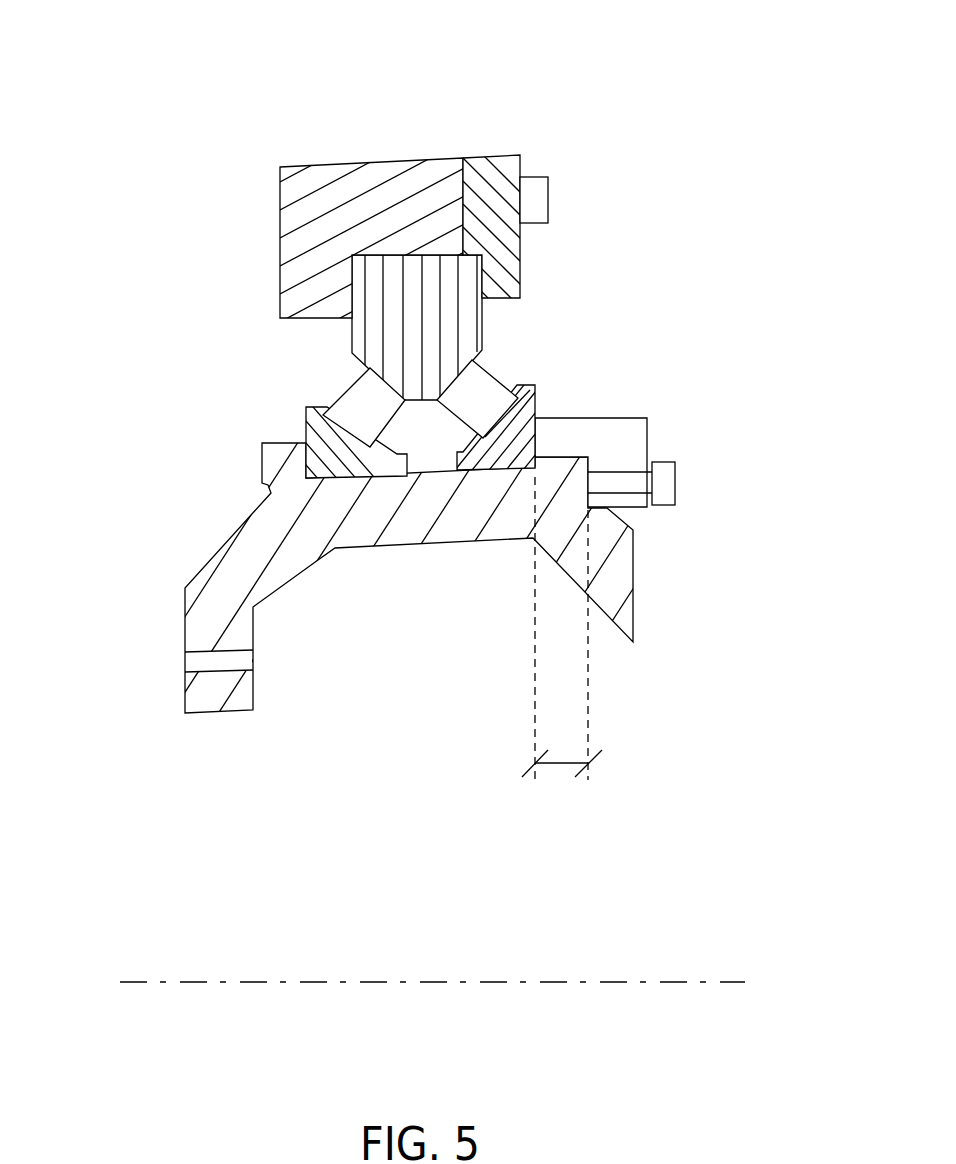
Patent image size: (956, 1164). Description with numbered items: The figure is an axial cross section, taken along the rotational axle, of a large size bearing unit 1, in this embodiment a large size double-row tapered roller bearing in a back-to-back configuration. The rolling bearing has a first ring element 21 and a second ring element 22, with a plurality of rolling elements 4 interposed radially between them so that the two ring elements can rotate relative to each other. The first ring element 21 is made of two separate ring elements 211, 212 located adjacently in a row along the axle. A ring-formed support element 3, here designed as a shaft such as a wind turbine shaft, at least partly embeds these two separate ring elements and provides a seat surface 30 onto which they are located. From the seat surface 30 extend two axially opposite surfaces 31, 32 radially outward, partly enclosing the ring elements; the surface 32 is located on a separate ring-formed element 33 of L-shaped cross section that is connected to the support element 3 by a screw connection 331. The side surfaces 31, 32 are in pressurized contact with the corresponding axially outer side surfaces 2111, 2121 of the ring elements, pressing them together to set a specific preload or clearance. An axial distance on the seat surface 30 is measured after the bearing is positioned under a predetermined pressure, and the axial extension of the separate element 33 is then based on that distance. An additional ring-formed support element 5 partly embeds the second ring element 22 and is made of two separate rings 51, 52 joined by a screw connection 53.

The large size bearing unit 1 is at (213, 97).
The ring-formed support element 3 is at (215, 713).
The seat surface 30 is at (433, 474).
The axially opposite surface 31 is at (410, 560).
The axially outer side surface 2111 is at (303, 457).
The first ring element 21 is at (312, 445).
The separate ring element 211 is at (360, 516).
The separate ring element 212 is at (522, 412).
The axially opposite surface 32 is at (531, 437).
The axially outer side surface 2121 is at (538, 430).
The separate ring-formed element 33 is at (647, 442).
The screw connection 331 is at (675, 483).
The second ring element 22 is at (443, 320).
The rolling elements 4 is at (347, 390).
The additional ring-formed support element 5 is at (371, 160).
The separate ring 51 is at (375, 201).
The separate ring 52 is at (520, 155).
The screw connection 53 is at (548, 197).